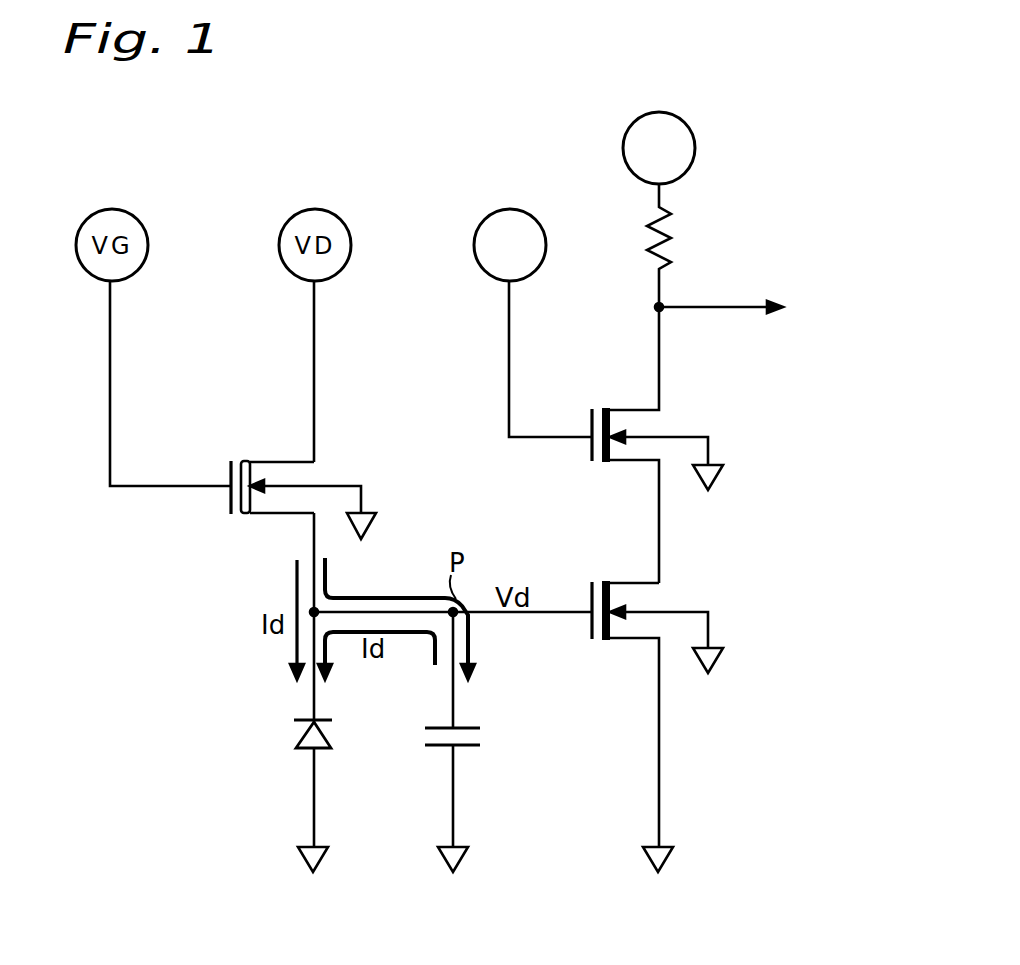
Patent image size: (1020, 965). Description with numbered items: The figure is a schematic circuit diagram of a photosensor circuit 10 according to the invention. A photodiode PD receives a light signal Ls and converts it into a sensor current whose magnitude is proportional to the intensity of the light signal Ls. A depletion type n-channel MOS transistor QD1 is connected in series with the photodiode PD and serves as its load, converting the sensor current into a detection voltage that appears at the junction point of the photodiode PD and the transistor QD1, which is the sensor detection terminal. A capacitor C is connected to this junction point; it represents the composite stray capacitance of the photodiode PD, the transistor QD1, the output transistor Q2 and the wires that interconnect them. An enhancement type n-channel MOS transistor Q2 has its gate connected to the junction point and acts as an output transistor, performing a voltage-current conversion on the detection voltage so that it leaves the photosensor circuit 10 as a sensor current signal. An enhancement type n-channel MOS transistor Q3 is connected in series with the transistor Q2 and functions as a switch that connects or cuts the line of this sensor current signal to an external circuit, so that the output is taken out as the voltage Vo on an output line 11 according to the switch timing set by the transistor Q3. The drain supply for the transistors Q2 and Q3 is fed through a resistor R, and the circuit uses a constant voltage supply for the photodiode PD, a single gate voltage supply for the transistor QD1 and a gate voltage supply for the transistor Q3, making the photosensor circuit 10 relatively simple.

The photosensor circuit 10 is at (491, 153).
The output line 11 is at (717, 312).
The depletion type n-channel MOS transistor QD1 is at (243, 463).
The enhancement type n-channel MOS transistor Q2 is at (605, 578).
The enhancement type n-channel MOS transistor Q3 is at (605, 410).
The photodiode PD is at (292, 815).
The capacitor C is at (460, 761).
The resistor R is at (669, 245).
The light signal Ls is at (285, 776).